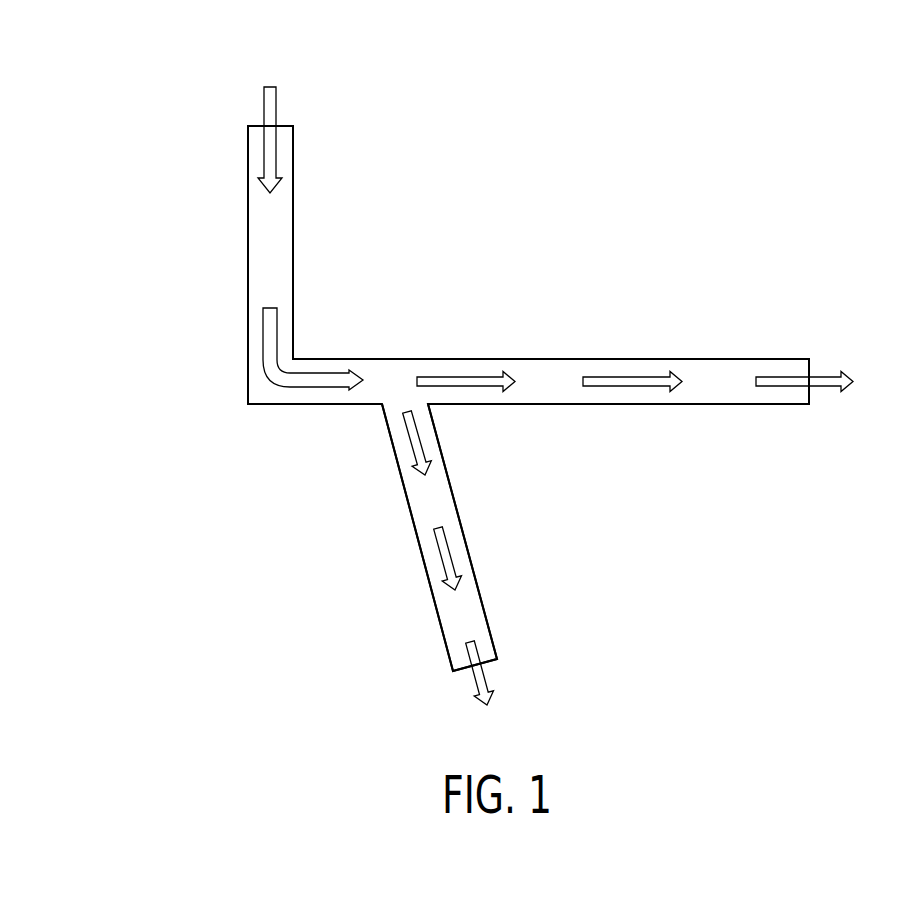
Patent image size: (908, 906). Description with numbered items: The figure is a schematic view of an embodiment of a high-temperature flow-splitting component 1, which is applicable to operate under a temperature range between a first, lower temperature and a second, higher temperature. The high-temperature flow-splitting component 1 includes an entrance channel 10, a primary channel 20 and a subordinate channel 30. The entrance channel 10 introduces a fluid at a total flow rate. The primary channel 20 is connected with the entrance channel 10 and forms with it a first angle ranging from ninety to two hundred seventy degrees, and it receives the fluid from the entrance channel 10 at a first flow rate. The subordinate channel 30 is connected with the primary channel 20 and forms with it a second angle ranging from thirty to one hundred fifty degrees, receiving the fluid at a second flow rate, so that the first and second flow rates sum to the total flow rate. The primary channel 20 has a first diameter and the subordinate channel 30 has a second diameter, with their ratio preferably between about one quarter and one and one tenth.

The high-temperature flow-splitting component 1 is at (183, 55).
The entrance channel 10 is at (247, 230).
The primary channel 20 is at (549, 358).
The subordinate channel 30 is at (464, 527).